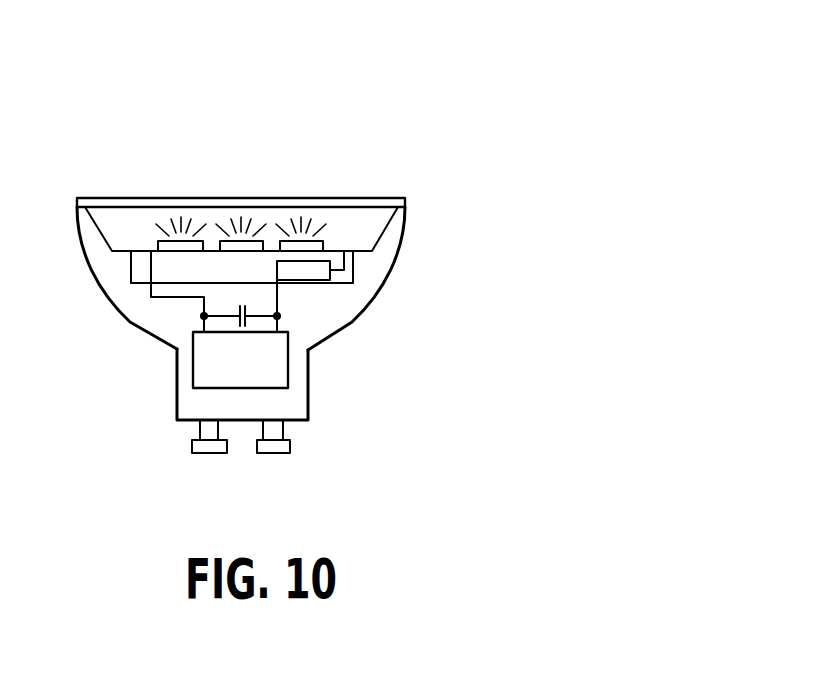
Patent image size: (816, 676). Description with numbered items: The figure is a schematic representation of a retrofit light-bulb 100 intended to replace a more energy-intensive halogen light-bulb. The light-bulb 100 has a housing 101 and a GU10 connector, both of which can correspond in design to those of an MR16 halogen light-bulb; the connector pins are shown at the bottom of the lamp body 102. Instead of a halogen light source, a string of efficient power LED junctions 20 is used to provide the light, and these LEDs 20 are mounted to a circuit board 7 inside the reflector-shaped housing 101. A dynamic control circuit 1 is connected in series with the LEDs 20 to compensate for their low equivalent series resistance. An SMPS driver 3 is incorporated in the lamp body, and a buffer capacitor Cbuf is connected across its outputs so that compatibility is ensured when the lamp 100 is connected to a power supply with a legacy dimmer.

The retrofit light-bulb 100 is at (392, 115).
The housing 101 is at (397, 252).
The power LED junctions 20 is at (156, 245).
The circuit board 7 is at (131, 272).
The dynamic control circuit 1 is at (320, 280).
The buffer capacitor Cbuf is at (277, 294).
The power converter / electronics box 3 is at (288, 366).
The housing / base 102 is at (308, 398).